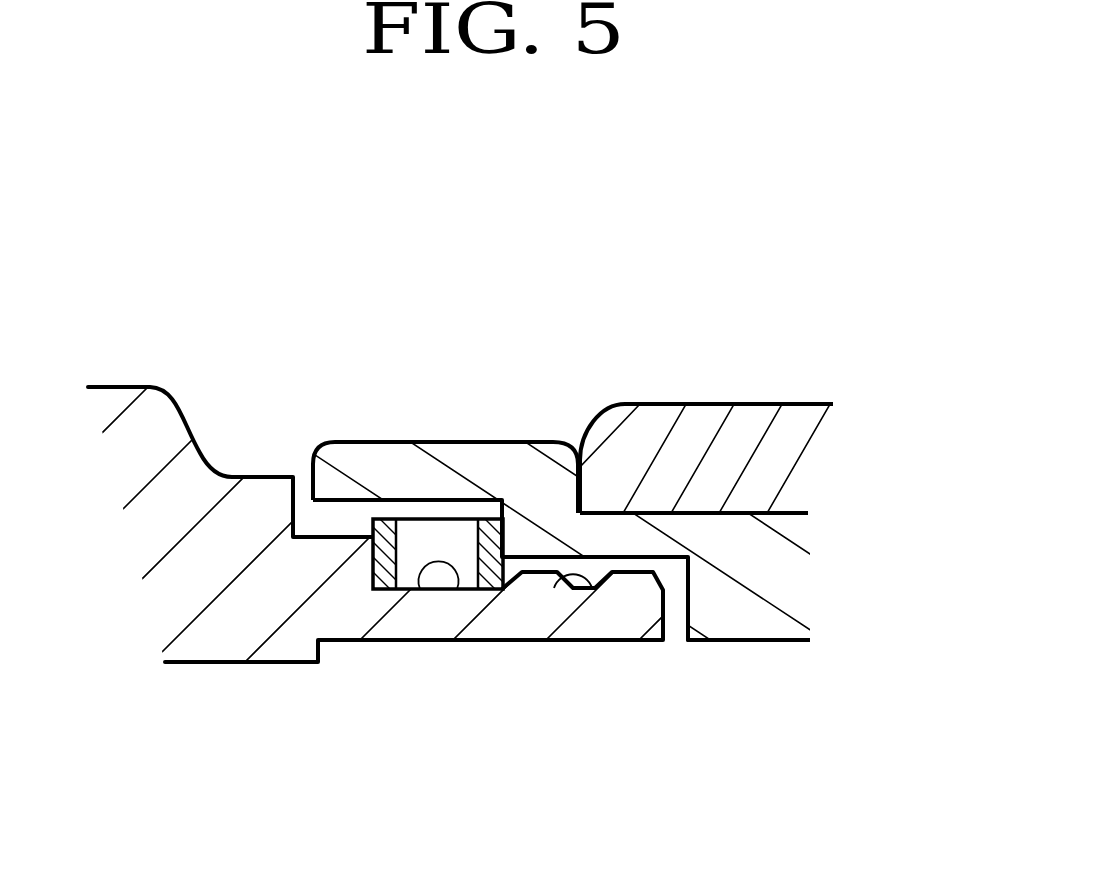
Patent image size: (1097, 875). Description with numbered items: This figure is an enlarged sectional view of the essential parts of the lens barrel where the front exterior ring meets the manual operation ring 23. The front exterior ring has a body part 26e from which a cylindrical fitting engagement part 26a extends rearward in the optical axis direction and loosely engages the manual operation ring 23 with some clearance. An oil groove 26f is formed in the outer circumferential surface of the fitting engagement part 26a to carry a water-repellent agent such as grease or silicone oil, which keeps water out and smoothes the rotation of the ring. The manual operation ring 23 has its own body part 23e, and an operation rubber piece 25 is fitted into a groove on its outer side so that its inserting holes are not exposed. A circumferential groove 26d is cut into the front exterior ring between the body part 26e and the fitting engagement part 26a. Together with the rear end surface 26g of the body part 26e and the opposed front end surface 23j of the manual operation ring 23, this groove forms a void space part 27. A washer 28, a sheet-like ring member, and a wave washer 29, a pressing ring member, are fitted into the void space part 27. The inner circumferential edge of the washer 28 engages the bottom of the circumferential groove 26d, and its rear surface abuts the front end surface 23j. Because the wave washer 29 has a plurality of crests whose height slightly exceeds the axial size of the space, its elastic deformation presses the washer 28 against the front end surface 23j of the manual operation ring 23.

The manual operation ring 23 is at (558, 477).
The body part of the manual operation ring 23e is at (773, 587).
The front end surface of the manual operation ring 23j is at (505, 532).
The operation rubber piece 25 is at (685, 423).
The fitting engagement part of the front exterior ring 26a is at (635, 610).
The circumferential groove 26d is at (420, 589).
The body part of the front exterior ring 26e is at (127, 438).
The oil groove 26f is at (555, 588).
The rear end surface of the body part 26g is at (370, 567).
The void space part 27 is at (396, 500).
The washer 28 is at (496, 497).
The wave washer 29 is at (425, 530).